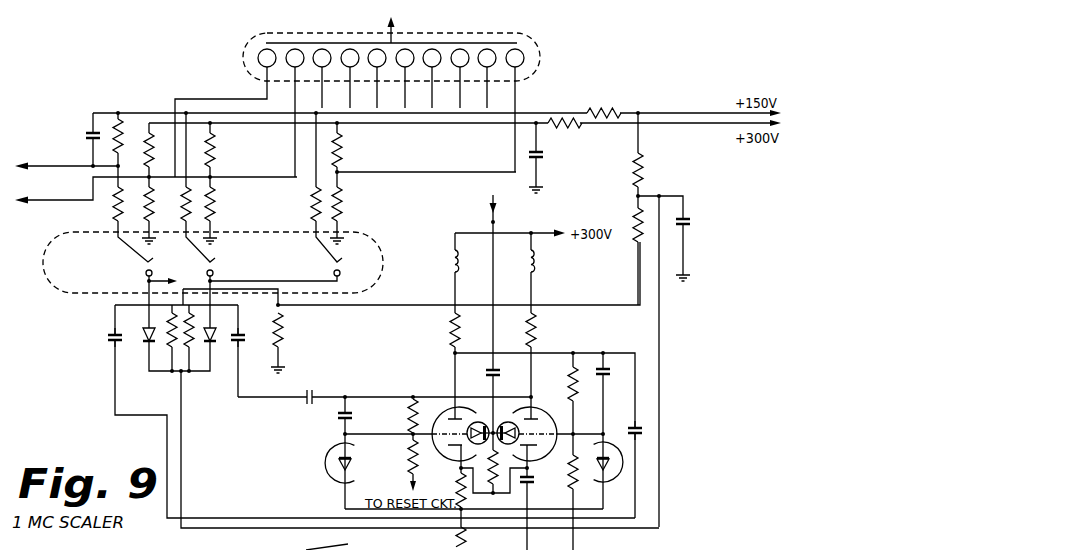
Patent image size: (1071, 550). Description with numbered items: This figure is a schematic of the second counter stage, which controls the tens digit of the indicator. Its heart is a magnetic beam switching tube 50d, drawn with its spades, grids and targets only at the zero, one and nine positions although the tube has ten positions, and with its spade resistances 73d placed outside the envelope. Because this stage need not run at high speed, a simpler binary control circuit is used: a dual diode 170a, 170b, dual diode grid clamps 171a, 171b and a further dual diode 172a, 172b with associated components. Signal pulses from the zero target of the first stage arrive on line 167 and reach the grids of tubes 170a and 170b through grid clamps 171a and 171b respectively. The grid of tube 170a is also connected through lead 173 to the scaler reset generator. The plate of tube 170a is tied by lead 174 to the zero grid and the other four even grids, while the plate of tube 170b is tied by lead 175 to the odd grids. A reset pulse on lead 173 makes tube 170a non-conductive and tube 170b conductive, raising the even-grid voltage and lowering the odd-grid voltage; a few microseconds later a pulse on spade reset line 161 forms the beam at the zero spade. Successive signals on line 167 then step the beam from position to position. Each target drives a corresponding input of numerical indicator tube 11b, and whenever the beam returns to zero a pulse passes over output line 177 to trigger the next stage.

The numerical indicator tube 11b is at (248, 50).
The spade reset line 161 is at (62, 165).
The output line 177 is at (79, 200).
The spade resistances 73d is at (318, 196).
The magnetic beam switching tube 50d is at (66, 295).
The lead 174 is at (112, 352).
The lead 175 is at (238, 381).
The line 167 is at (490, 222).
The diode grid clamp 171a is at (476, 423).
The diode grid clamp 171b is at (510, 422).
The dual diode section (binary tube) 170a is at (441, 416).
The dual diode section (binary tube) 170b is at (553, 426).
The dual diode section 172a is at (325, 462).
The dual diode section 172b is at (623, 468).
The lead 173 is at (410, 477).